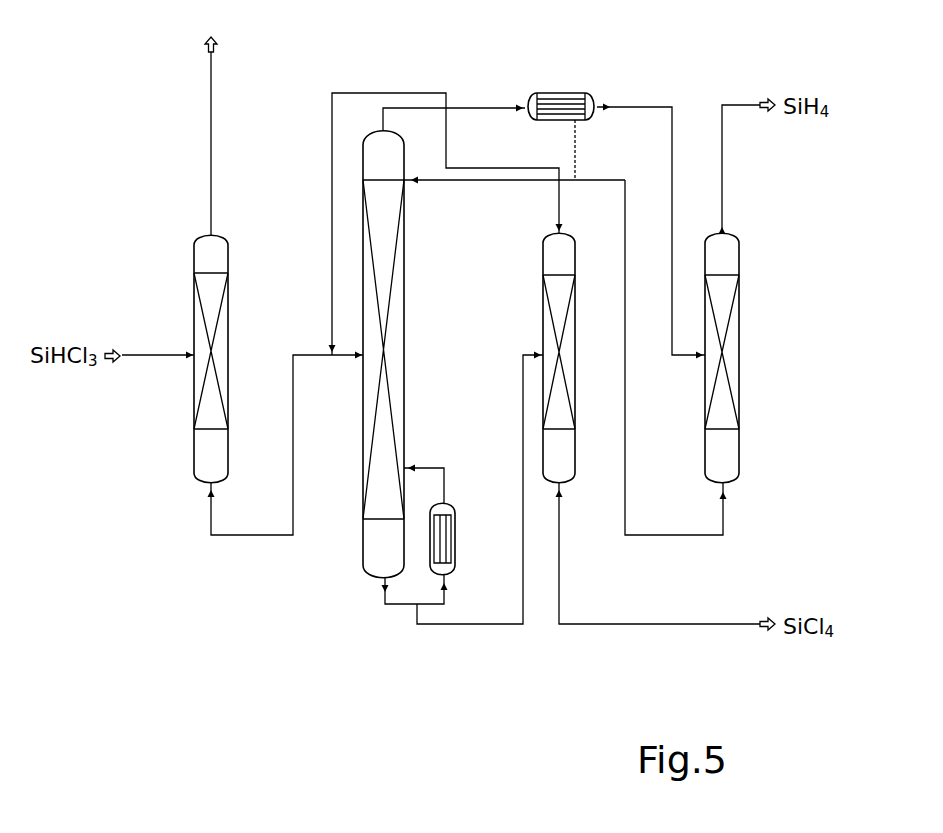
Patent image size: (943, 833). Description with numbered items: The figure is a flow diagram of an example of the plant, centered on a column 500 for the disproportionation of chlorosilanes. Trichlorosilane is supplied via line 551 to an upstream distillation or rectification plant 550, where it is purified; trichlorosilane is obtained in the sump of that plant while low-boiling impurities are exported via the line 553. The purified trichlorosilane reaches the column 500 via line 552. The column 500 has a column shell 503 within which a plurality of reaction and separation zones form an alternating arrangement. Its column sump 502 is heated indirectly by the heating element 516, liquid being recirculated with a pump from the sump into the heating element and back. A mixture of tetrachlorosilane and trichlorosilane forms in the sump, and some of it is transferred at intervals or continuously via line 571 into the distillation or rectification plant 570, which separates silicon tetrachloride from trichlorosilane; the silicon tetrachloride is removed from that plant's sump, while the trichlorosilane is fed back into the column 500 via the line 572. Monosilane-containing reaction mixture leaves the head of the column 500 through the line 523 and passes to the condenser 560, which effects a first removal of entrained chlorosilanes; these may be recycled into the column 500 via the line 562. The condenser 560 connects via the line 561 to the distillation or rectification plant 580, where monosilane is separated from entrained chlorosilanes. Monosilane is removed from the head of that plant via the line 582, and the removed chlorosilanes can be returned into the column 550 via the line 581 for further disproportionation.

The column 500 is at (371, 373).
The column sump 502 is at (378, 548).
The column shell 503 is at (403, 332).
The heating element 516 is at (457, 547).
The line 523 is at (383, 118).
The distillation or rectification plant 550 is at (194, 258).
The line 551 is at (143, 355).
The line 552 is at (243, 538).
The line 553 is at (210, 108).
The condenser 560 is at (563, 95).
The line 561 is at (643, 106).
The line 562 is at (576, 138).
The distillation or rectification plant 570 is at (563, 410).
The line 571 is at (455, 625).
The line 572 is at (496, 172).
The distillation or rectification plant 580 is at (727, 392).
The line 581 is at (693, 540).
The line 582 is at (725, 152).